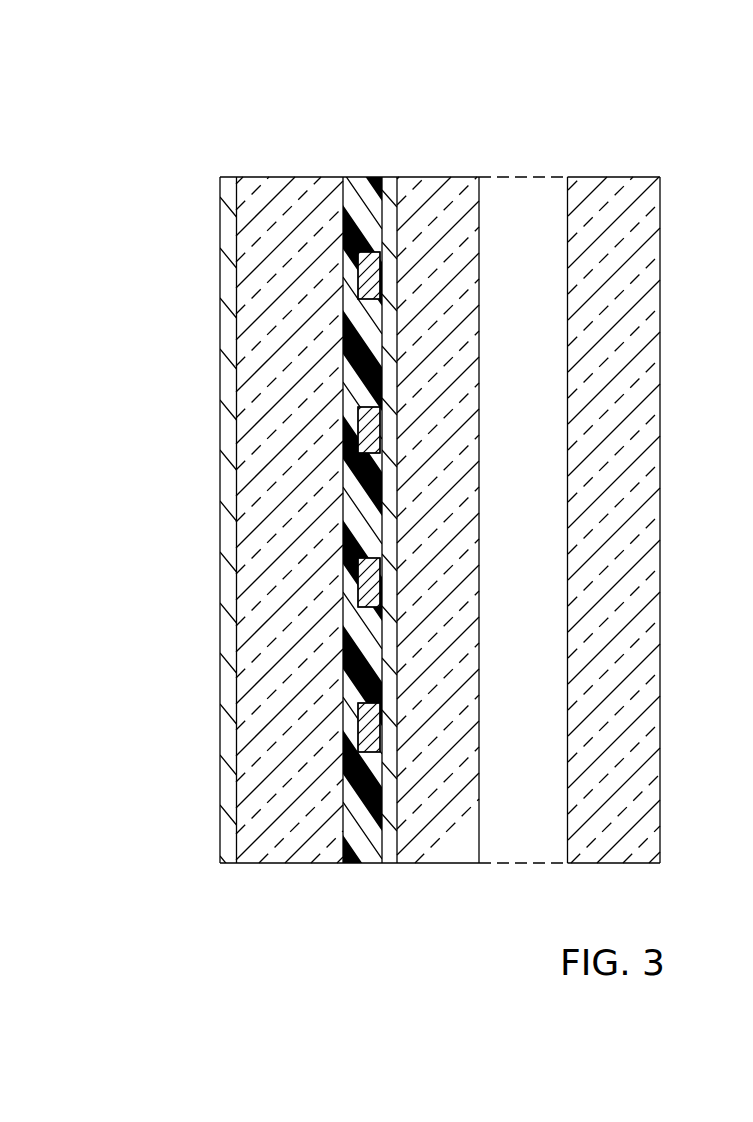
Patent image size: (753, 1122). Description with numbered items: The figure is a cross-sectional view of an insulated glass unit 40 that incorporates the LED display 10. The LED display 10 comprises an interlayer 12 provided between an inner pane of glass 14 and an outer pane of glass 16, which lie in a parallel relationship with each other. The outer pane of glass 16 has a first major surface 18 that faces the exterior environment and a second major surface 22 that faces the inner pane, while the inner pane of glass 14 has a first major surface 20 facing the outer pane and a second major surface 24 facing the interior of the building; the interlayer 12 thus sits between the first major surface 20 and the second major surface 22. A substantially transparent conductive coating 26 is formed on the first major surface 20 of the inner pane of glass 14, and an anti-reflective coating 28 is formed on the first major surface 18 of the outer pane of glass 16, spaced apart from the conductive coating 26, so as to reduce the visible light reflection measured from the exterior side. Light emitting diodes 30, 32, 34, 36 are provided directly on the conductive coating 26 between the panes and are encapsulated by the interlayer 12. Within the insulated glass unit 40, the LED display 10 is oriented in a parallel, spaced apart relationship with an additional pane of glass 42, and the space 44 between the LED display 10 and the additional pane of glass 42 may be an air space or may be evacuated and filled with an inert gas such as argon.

The LED display 10 is at (292, 863).
The interlayer 12 is at (328, 511).
The inner pane of glass 14 is at (463, 474).
The outer pane of glass 16 is at (292, 178).
The first major surface 18 is at (237, 360).
The first major surface 20 is at (402, 513).
The second major surface 22 is at (343, 678).
The second major surface 24 is at (480, 300).
The conductive coating 26 is at (392, 183).
The anti-reflective coating 28 is at (220, 807).
The light emitting diode 30 is at (373, 275).
The light emitting diode 32 is at (370, 435).
The light emitting diode 34 is at (378, 578).
The light emitting diode 36 is at (380, 732).
The insulated glass unit 40 is at (96, 52).
The additional pane of glass 42 is at (620, 182).
The space 44 is at (524, 474).